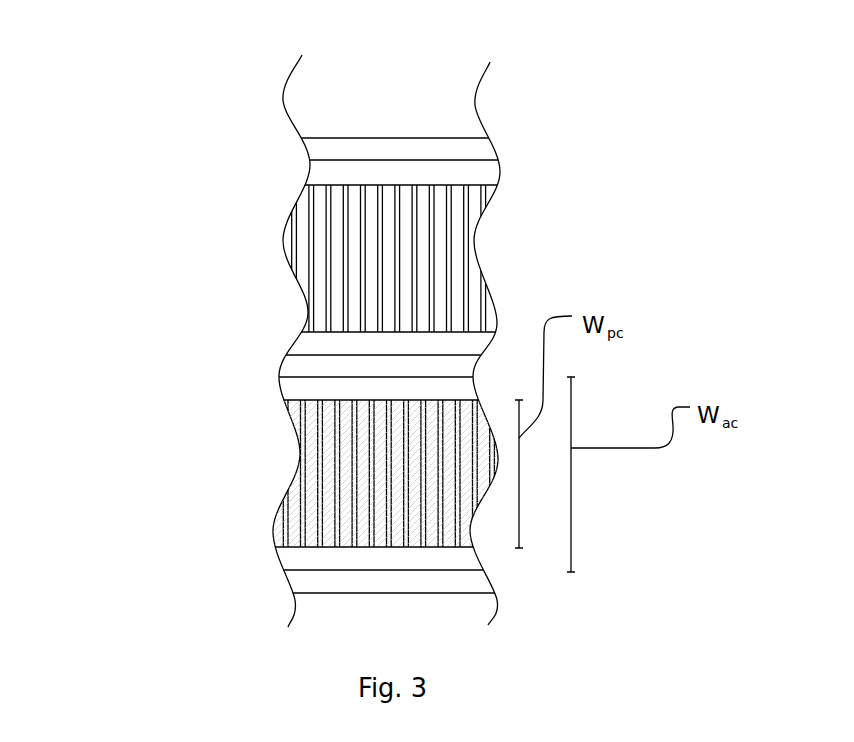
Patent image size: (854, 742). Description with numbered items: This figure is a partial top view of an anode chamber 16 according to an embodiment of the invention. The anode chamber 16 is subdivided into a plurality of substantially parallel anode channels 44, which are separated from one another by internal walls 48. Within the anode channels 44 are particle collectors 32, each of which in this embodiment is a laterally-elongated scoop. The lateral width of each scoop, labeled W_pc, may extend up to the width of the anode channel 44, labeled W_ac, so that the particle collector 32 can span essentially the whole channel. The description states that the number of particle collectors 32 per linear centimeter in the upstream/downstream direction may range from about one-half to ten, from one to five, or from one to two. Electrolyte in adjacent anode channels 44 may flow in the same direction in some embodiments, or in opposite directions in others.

The anode chamber 16 is at (121, 123).
The internal wall 48 is at (318, 148).
The anode channel 44 is at (335, 173).
The particle collector 32 is at (427, 530).